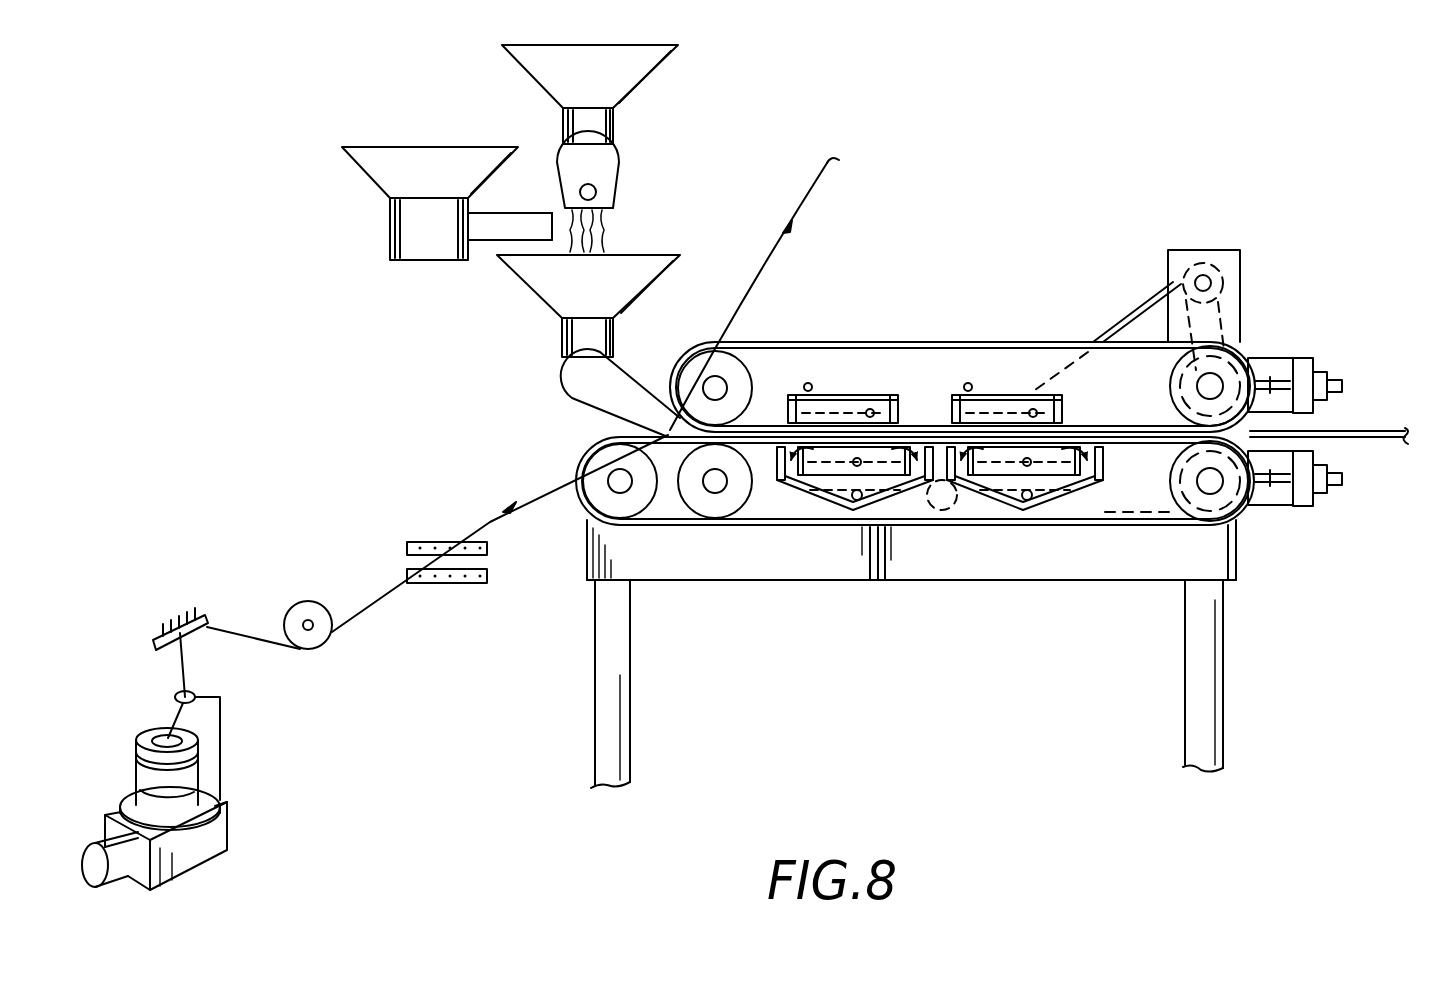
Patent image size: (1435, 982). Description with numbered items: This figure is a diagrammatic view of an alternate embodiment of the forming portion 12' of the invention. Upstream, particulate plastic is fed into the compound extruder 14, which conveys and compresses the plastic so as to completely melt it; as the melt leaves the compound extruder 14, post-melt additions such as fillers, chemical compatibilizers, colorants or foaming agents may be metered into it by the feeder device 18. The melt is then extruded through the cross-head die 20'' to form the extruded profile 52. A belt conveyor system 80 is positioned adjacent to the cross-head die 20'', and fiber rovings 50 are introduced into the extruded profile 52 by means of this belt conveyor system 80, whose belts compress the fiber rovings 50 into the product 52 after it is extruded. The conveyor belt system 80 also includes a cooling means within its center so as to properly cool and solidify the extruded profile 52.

The forming portion 12' is at (992, 510).
The compound extruder 14 is at (613, 171).
The feeder device 18 is at (392, 228).
The cross-head die 20'' is at (574, 346).
The fiber rovings 50 is at (763, 260).
The extruded profile 52 is at (752, 435).
The belt conveyor system 80 is at (932, 518).